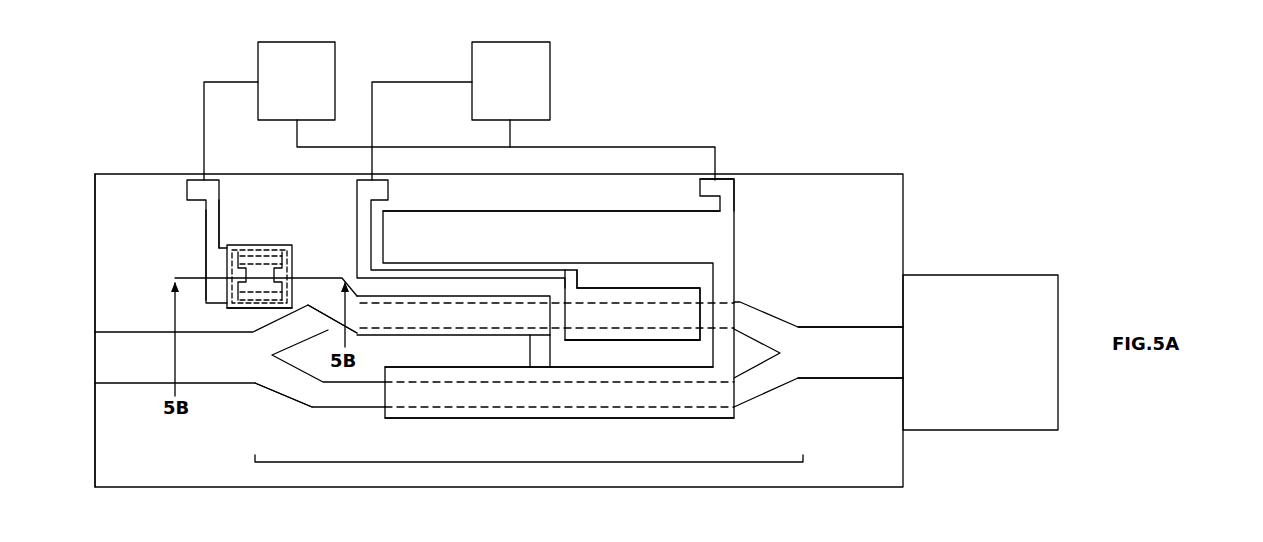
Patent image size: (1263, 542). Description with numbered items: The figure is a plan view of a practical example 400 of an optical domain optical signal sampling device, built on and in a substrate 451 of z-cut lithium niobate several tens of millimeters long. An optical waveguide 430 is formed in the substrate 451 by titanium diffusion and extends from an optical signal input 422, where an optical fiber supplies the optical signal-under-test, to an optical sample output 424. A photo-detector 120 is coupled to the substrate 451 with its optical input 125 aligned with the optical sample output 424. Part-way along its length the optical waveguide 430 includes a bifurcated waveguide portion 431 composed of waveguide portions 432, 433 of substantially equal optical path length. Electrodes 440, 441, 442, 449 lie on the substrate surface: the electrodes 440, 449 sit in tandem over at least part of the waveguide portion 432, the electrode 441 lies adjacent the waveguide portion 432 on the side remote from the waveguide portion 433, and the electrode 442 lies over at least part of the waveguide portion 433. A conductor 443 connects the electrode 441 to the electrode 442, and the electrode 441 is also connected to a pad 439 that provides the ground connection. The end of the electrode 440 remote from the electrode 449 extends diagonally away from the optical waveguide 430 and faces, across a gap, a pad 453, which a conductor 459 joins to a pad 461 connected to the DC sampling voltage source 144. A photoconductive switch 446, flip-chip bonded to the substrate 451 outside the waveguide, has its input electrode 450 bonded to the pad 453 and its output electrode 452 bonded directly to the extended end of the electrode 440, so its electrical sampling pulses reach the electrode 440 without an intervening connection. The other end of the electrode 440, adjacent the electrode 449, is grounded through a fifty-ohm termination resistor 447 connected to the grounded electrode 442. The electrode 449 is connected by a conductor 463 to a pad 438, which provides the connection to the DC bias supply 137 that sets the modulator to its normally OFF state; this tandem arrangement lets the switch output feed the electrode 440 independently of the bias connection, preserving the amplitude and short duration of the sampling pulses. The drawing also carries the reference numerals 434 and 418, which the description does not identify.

The optical domain optical signal sampling device 400 is at (790, 131).
The substrate 451 is at (95, 222).
The DC sampling voltage source 144 is at (316, 93).
The DC bias supply 137 is at (529, 93).
The pad 461 is at (187, 190).
The conductor 459 is at (206, 230).
The pad 453 is at (215, 262).
The photoconductive switch 446 is at (250, 245).
The output electrode 452 is at (282, 252).
The input electrode 450 is at (232, 306).
The optical waveguide 430 is at (132, 352).
The optical signal input 422 is at (95, 360).
The waveguide portion 433 is at (282, 395).
The waveguide portion 432 is at (362, 330).
The electrode 440 is at (468, 334).
The termination resistor 447 is at (552, 355).
The pad 438 is at (390, 188).
The conductor 463 is at (578, 278).
The waveguide arm under electrode 434 is at (640, 300).
The electrode 449 is at (642, 341).
The conductor 443 is at (735, 278).
The pad 439 is at (735, 188).
The electrode 441 is at (620, 211).
The electrode 442 is at (496, 420).
The Y-branch combiner 418 is at (757, 400).
The optical input 125 is at (900, 350).
The optical sample output 424 is at (900, 362).
The bifurcated waveguide portion 431 is at (525, 462).
The photo-detector 120 is at (990, 432).